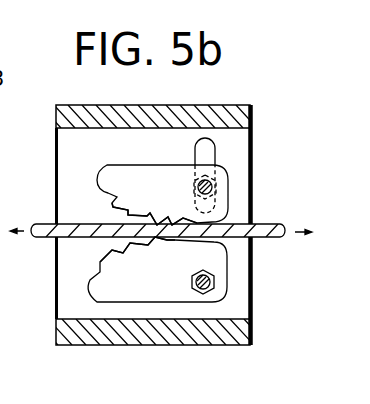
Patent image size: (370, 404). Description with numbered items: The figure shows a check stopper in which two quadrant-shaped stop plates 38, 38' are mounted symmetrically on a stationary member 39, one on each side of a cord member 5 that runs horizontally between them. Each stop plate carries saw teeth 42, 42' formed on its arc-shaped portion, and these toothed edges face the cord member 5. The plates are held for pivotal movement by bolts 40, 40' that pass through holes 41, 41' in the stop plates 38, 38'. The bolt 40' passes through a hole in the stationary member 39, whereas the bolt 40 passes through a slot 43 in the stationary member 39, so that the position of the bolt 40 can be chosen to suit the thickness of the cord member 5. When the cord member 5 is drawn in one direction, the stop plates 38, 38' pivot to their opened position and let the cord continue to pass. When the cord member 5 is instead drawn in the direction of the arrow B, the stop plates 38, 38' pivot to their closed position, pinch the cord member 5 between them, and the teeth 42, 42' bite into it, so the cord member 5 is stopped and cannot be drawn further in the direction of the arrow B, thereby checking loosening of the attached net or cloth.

The cord member 5 is at (277, 232).
The stop plate 38 is at (178, 180).
The stop plate 38' is at (174, 306).
The stationary member 39 is at (186, 328).
The bolt 40 is at (240, 185).
The bolt 40' is at (240, 283).
The hole 41 is at (257, 207).
The hole 41' is at (167, 268).
The teeth 42 is at (133, 211).
The teeth 42' is at (117, 257).
The slot 43 is at (213, 150).
The arrow B is at (174, 235).